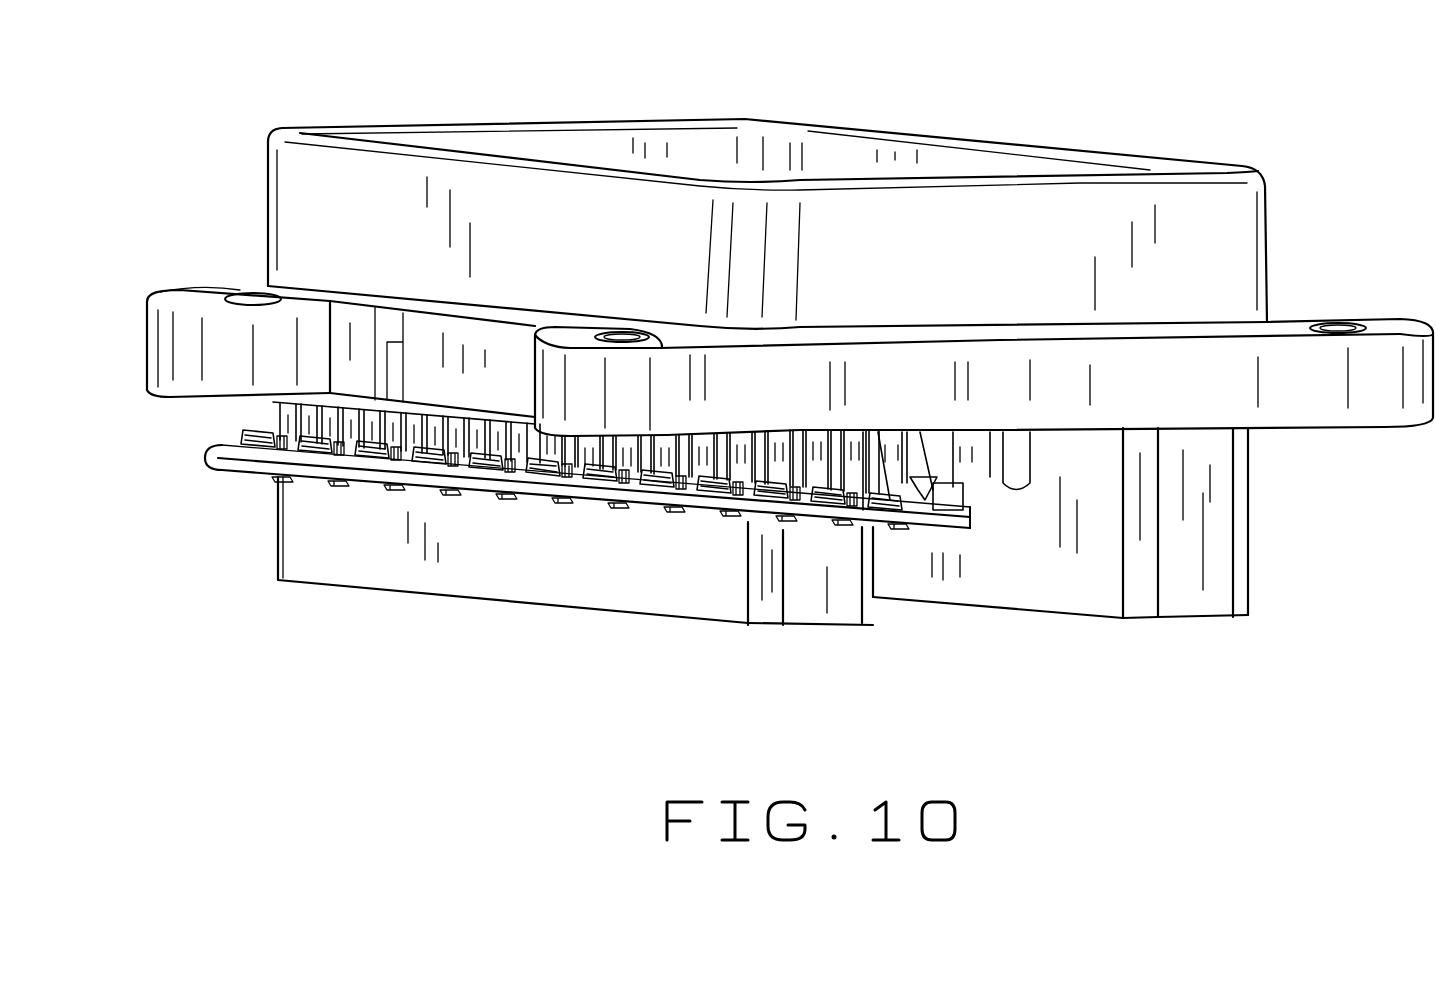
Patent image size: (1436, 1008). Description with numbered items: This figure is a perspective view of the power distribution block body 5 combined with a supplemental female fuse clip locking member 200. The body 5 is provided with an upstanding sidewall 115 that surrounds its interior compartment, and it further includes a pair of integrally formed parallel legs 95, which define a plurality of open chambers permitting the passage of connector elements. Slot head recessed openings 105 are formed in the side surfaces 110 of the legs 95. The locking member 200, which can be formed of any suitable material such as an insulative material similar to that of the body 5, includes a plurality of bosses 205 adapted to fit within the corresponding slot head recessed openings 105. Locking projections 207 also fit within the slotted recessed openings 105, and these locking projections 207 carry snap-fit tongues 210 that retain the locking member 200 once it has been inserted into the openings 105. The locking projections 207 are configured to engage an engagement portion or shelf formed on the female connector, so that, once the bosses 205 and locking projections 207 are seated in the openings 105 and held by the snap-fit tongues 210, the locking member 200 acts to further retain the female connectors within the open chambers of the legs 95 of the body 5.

The body 5 is at (486, 102).
The upstanding sidewall 115 is at (870, 137).
The side surfaces 110 is at (310, 513).
The slot head recessed openings 105 is at (398, 430).
The locking member 200 is at (458, 500).
The bosses 205 is at (632, 480).
The snap-fit tongues 210 is at (800, 532).
The legs 95 is at (847, 592).
The locking projections 207 is at (943, 520).